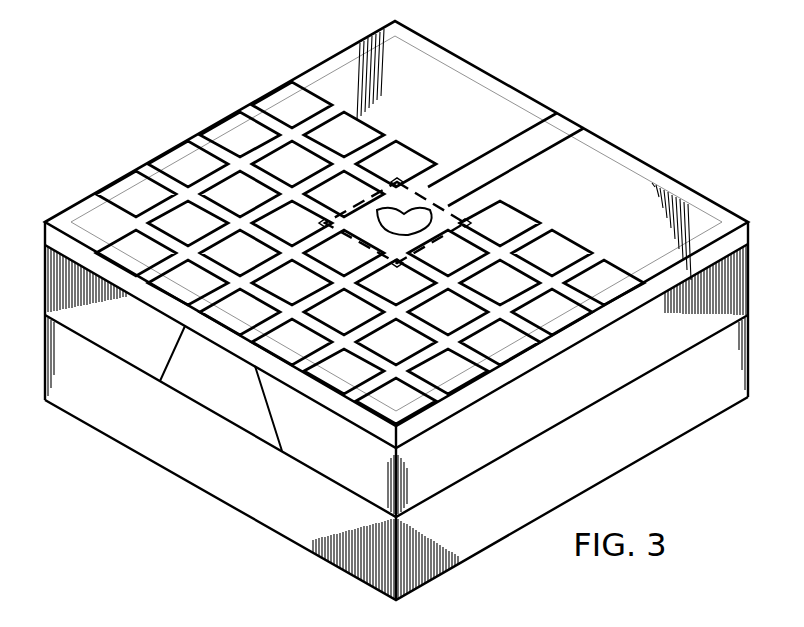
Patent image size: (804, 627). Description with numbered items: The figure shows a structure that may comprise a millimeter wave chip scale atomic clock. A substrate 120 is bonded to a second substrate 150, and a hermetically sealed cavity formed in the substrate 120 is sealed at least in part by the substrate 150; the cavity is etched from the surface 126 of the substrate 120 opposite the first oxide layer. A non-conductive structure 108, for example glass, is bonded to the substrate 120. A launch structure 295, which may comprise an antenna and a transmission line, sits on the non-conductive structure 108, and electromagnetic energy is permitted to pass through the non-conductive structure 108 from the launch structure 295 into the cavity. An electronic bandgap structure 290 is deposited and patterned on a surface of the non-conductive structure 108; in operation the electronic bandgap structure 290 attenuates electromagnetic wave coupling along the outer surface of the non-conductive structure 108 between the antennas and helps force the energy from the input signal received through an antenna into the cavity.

The non-conductive structure 108 is at (468, 72).
The substrate 120 is at (573, 403).
The surface of the substrate 126 is at (241, 397).
The substrate 150 is at (660, 437).
The electronic bandgap (EBG) structure 290 is at (178, 158).
The launch structure 295 is at (425, 188).